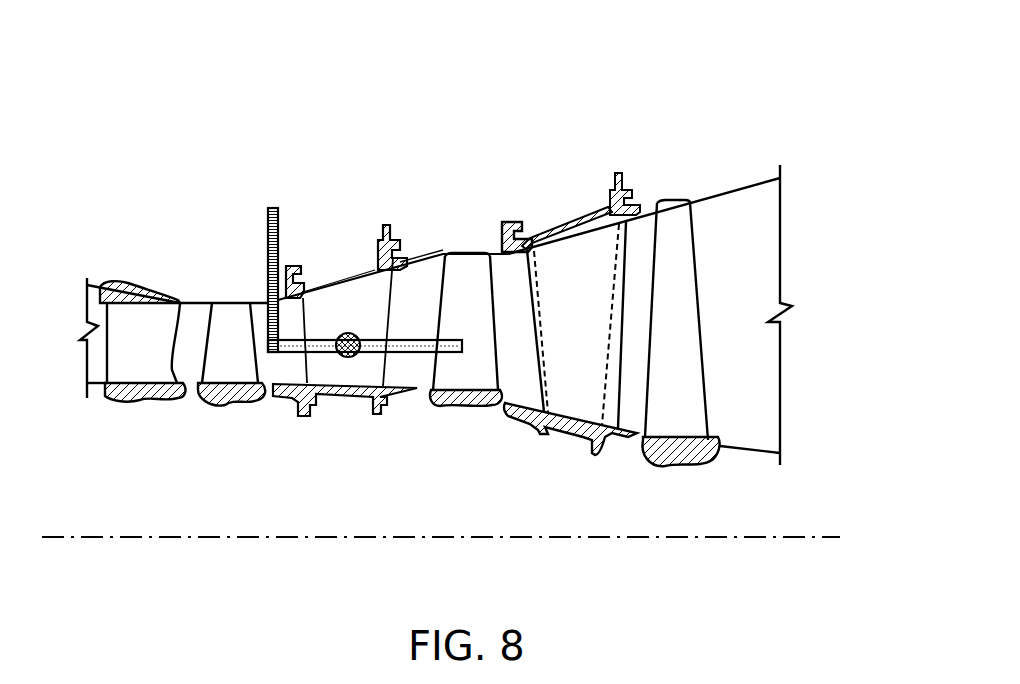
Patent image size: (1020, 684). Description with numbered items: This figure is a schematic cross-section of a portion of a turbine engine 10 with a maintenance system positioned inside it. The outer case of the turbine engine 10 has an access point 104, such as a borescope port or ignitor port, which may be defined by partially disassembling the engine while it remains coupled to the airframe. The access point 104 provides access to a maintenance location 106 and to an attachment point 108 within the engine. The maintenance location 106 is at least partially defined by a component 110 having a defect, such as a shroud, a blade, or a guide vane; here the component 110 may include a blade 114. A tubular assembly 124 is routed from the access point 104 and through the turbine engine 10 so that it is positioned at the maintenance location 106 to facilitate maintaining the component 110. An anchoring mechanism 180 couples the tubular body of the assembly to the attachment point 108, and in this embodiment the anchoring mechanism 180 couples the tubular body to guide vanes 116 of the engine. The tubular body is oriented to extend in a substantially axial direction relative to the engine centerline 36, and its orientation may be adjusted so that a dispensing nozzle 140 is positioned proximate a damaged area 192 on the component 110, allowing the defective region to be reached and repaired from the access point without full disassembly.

The turbine engine 10 is at (708, 89).
The centerline 36 is at (720, 540).
The access point 104 is at (256, 289).
The maintenance location 106 is at (503, 358).
The attachment point 108 is at (338, 364).
The component 110 is at (541, 272).
The blade 114 is at (501, 306).
The guide vanes 116 is at (403, 283).
The tubular assembly 124 is at (410, 372).
The dispensing nozzle 140 is at (469, 346).
The anchoring mechanism 180 is at (358, 358).
The damaged area 192 is at (466, 386).